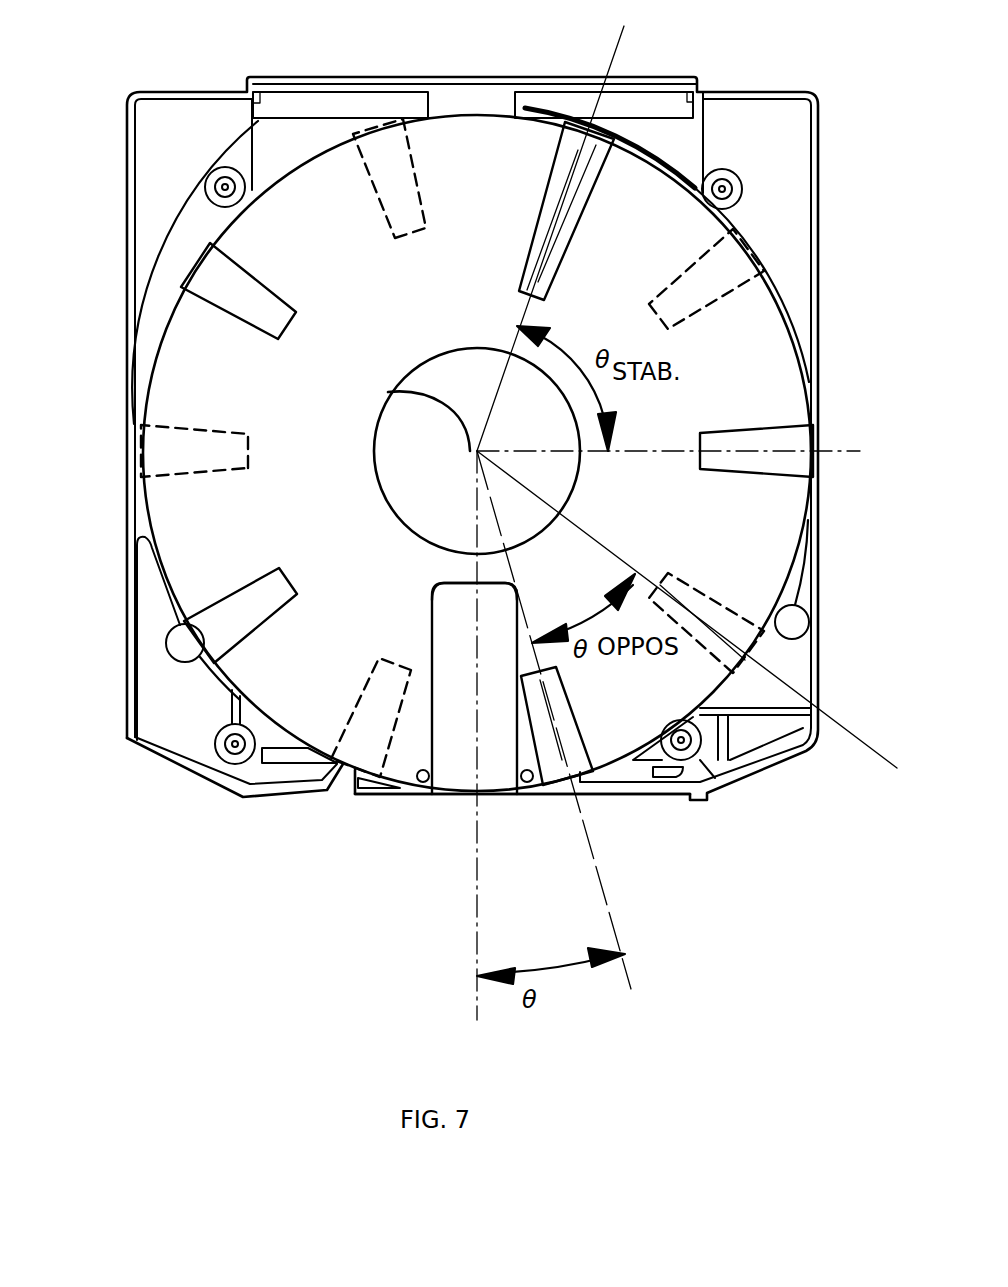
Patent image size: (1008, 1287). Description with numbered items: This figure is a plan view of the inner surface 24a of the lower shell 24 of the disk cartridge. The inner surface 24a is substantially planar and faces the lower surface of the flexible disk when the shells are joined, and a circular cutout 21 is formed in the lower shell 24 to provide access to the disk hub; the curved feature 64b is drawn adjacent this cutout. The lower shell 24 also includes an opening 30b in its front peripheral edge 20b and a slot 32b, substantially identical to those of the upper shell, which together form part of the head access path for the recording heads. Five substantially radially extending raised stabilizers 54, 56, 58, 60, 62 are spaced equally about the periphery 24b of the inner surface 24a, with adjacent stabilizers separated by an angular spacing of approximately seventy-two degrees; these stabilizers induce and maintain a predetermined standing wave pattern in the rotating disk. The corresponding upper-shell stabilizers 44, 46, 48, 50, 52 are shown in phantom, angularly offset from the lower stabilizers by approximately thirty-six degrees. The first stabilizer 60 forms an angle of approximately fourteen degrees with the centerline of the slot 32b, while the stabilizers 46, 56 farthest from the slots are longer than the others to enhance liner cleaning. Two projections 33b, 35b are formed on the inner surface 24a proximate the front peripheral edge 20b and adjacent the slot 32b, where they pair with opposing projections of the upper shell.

The front peripheral edge 20b is at (640, 796).
The circular cutout 21 is at (390, 447).
The lower shell 24 is at (743, 92).
The inner surface 24a is at (760, 370).
The periphery 24b is at (155, 312).
The opening 30b is at (450, 777).
The slot 32b is at (445, 598).
The projection 33b is at (530, 782).
The projection 35b is at (425, 786).
The stabilizer 44 is at (693, 263).
The stabilizer 46 is at (433, 234).
The stabilizer 48 is at (245, 420).
The stabilizer 50 is at (362, 684).
The stabilizer 52 is at (680, 583).
The stabilizer 54 is at (272, 292).
The stabilizer 56 is at (577, 223).
The stabilizer 58 is at (752, 478).
The stabilizer 60 is at (580, 750).
The stabilizer 62 is at (265, 580).
The spiral contour of hub 64b is at (390, 392).